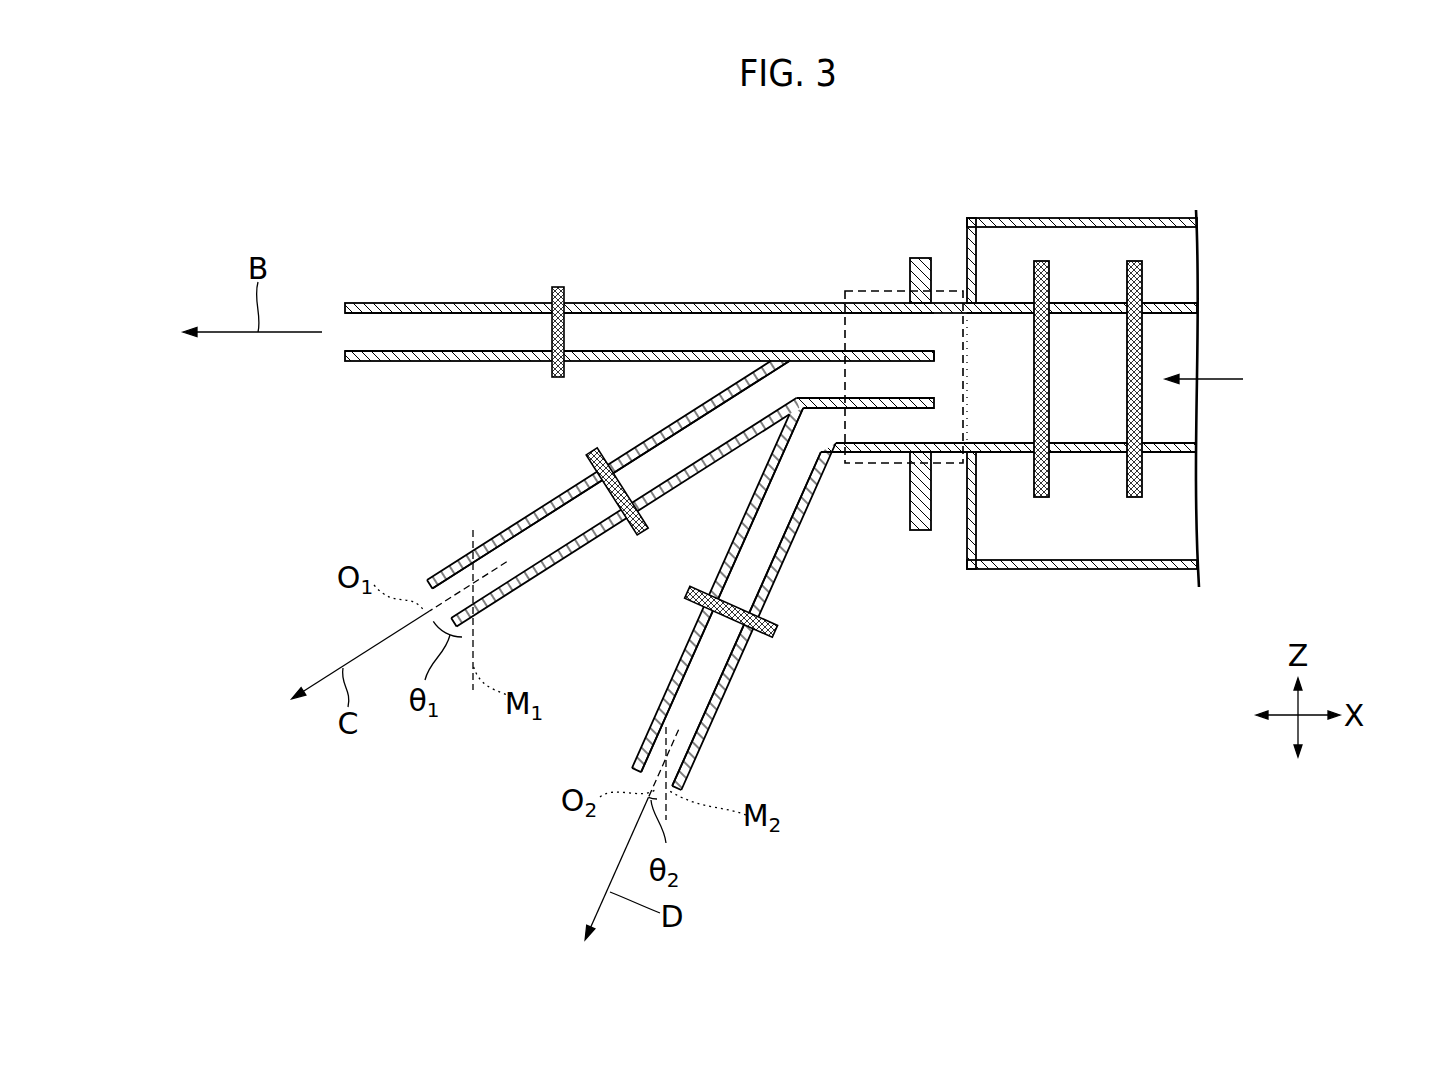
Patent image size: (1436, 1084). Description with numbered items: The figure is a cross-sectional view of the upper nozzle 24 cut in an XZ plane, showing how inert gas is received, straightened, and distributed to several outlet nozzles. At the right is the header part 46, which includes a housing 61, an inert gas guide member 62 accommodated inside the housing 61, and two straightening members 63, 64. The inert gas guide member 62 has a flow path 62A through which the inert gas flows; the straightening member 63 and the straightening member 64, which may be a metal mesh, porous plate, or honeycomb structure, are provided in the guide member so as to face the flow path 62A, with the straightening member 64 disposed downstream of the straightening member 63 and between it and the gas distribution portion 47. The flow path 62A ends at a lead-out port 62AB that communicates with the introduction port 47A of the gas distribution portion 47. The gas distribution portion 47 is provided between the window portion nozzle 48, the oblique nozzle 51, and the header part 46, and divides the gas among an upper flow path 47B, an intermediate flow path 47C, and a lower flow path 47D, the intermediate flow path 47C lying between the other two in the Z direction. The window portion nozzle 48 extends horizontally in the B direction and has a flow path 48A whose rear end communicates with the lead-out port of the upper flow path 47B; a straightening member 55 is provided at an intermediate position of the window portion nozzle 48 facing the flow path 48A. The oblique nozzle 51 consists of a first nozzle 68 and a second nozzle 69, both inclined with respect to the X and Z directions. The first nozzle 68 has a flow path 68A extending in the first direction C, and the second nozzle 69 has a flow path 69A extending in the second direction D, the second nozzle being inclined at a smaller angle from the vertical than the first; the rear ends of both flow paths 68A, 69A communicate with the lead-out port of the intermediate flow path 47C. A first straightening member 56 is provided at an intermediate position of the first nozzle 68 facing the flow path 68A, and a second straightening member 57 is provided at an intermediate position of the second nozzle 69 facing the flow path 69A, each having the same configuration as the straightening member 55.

The upper nozzle 24 is at (366, 220).
The header part 46 is at (1114, 216).
The gas distribution portion 47 is at (850, 291).
The introduction port 47A is at (952, 380).
The upper flow path 47B is at (818, 337).
The intermediate flow path 47C is at (828, 377).
The lower flow path 47D is at (878, 422).
The window portion nozzle 48 is at (680, 302).
The flow path 48A is at (476, 330).
The oblique nozzle 51 is at (637, 708).
The straightening member 55 is at (560, 296).
The first straightening member 56 is at (594, 452).
The second straightening member 57 is at (777, 628).
The housing 61 is at (1062, 218).
The inert gas guide member 62 is at (1183, 313).
The flow path 62A is at (1173, 350).
The lead-out port 62AB is at (978, 378).
The straightening member 63 is at (1137, 280).
The straightening member 64 is at (1048, 272).
The first nozzle 68 is at (560, 572).
The flow path 68A is at (542, 540).
The second nozzle 69 is at (682, 622).
The flow path 69A is at (702, 688).